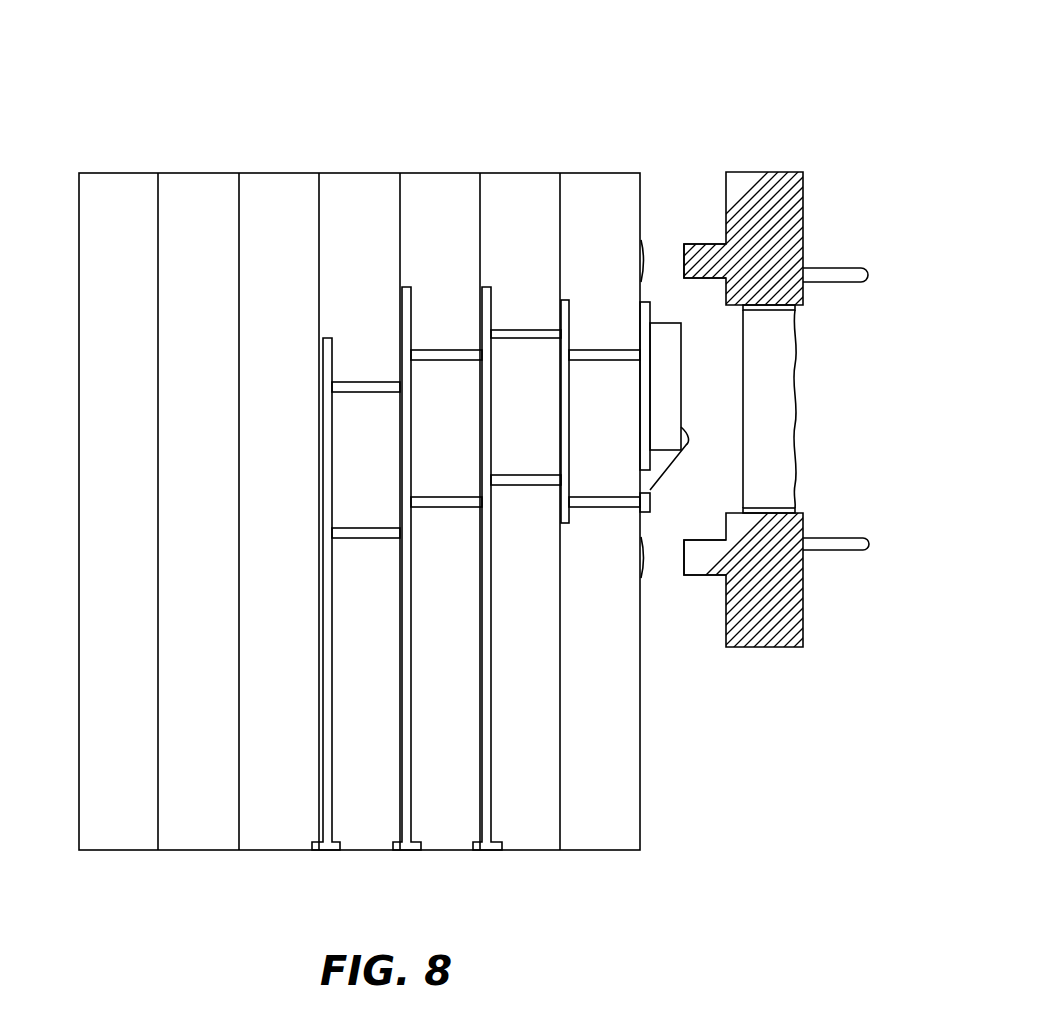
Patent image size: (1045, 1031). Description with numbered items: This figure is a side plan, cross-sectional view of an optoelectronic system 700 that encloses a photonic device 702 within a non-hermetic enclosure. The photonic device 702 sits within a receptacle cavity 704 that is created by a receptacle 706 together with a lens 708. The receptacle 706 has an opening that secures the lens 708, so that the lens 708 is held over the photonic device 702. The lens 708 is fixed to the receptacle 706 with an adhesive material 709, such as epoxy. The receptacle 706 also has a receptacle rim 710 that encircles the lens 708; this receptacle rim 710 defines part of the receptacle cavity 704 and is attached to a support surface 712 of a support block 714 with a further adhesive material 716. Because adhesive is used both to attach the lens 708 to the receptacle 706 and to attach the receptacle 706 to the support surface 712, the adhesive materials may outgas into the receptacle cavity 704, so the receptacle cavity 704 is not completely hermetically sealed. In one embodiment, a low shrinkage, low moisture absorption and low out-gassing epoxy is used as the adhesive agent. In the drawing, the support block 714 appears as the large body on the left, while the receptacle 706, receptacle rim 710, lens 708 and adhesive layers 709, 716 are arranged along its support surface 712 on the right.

The optoelectronic system 700 is at (588, 66).
The photonic device 702 is at (683, 352).
The receptacle cavity 704 is at (720, 455).
The receptacle 706 is at (765, 172).
The lens 708 is at (796, 465).
The adhesive material 709 is at (796, 309).
The receptacle rim 710 is at (710, 244).
The support surface 712 is at (641, 825).
The support block 714 is at (295, 166).
The adhesive material 716 is at (641, 242).